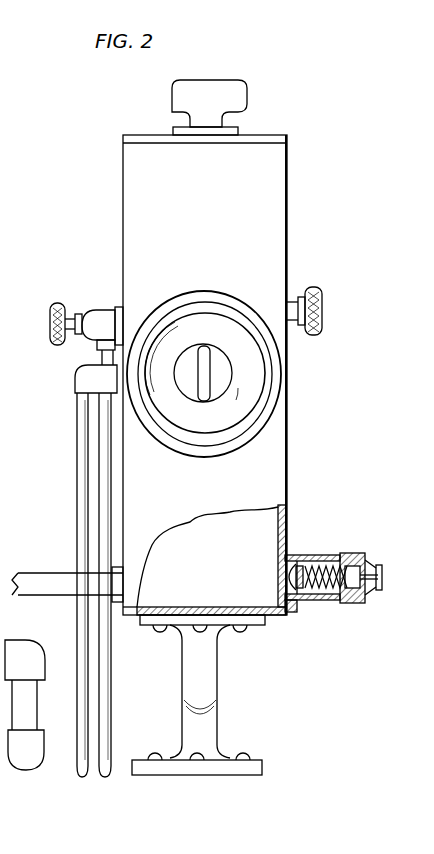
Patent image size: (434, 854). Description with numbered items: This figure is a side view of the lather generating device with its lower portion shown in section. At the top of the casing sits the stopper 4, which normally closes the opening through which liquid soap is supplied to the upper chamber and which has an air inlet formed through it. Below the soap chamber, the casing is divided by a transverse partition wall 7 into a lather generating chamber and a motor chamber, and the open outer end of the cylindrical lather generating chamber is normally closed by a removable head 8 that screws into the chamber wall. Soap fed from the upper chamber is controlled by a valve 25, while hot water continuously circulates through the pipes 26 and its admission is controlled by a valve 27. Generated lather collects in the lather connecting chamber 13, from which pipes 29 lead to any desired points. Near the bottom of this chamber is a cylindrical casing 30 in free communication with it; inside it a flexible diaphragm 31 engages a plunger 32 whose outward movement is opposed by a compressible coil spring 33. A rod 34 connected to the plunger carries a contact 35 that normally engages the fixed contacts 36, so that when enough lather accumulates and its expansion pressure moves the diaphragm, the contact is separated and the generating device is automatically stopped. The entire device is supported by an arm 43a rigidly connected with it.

The stopper 4 is at (187, 120).
The transverse partition wall 7 is at (284, 236).
The removable head 8 is at (246, 372).
The lather connecting chamber 13 is at (204, 560).
The valve 25 is at (325, 305).
The hot water pipes 26 is at (100, 493).
The valve 27 is at (53, 342).
The pipes 29 is at (27, 573).
The cylindrical casing 30 is at (303, 555).
The flexible diaphragm 31 is at (292, 572).
The plunger 32 is at (300, 602).
The compressible coil spring 33 is at (330, 557).
The rod 34 is at (382, 577).
The contact 35 is at (384, 592).
The fixed contacts 36 is at (373, 565).
The arm 43a is at (215, 697).